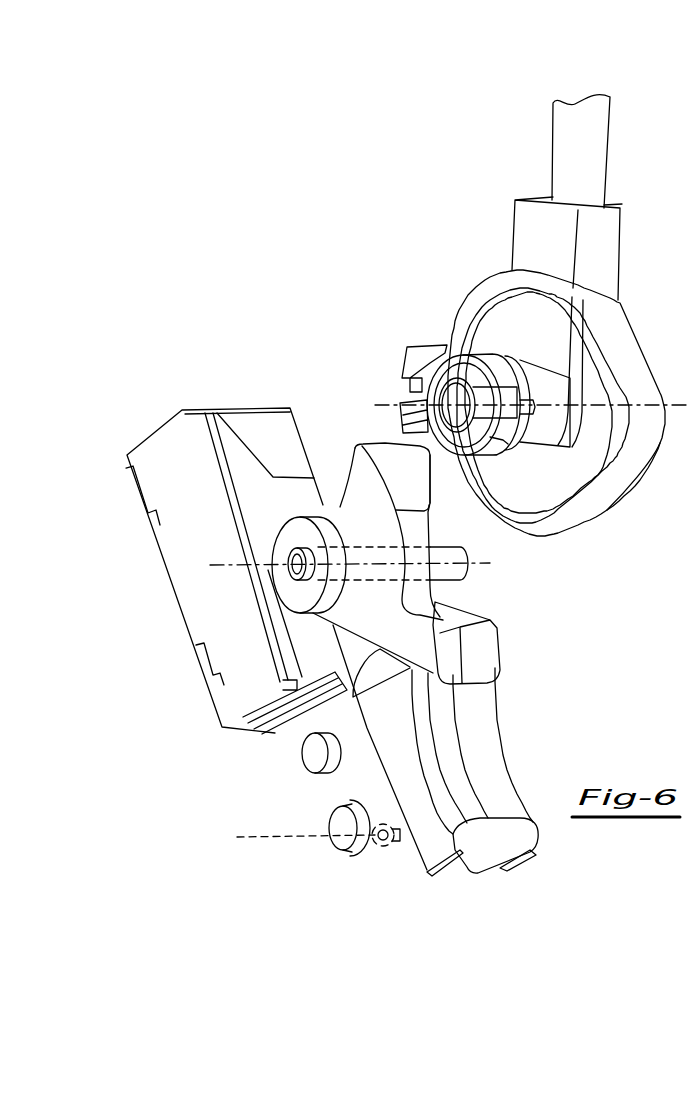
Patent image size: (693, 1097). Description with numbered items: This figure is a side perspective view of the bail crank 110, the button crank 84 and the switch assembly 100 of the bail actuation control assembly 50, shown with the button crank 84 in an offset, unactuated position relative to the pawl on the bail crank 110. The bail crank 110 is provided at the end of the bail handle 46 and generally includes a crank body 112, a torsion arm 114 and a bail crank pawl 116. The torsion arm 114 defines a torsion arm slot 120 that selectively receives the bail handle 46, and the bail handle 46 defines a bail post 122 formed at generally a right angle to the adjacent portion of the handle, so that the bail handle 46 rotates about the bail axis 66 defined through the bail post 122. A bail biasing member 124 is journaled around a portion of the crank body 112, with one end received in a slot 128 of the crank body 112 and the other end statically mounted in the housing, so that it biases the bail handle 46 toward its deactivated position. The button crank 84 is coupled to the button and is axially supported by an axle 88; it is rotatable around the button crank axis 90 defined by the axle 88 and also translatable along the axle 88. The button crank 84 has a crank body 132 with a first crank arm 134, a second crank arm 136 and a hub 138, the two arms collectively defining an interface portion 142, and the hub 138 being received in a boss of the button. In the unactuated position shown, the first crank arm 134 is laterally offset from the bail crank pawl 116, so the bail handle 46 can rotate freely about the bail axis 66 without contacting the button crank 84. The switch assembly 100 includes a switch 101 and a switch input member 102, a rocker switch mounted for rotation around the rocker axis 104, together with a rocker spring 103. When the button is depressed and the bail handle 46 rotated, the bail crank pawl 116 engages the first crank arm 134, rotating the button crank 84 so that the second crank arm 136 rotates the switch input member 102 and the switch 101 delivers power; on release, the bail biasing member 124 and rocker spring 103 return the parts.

The bail handle 46 is at (600, 150).
The bail actuation control assembly 50 is at (379, 298).
The bail axis 66 is at (672, 402).
The button crank 84 is at (355, 458).
The axle 88 is at (460, 572).
The button crank axis 90 is at (227, 565).
The switch assembly 100 is at (277, 787).
The switch 101 is at (210, 592).
The switch input member 102 is at (487, 740).
The rocker spring 103 is at (392, 850).
The rocker axis 104 is at (262, 840).
The bail crank 110 is at (617, 320).
The crank body 112 is at (622, 490).
The torsion arm 114 is at (607, 242).
The bail crank pawl 116 is at (430, 352).
The torsion arm slot 120 is at (560, 222).
The bail post 122 is at (445, 410).
The bail biasing member 124 is at (481, 352).
The slot 128 is at (415, 395).
The crank body 132 is at (373, 510).
The first crank arm 134 is at (424, 484).
The second crank arm 136 is at (490, 640).
The hub 138 is at (302, 600).
The interface portion 142 is at (523, 563).